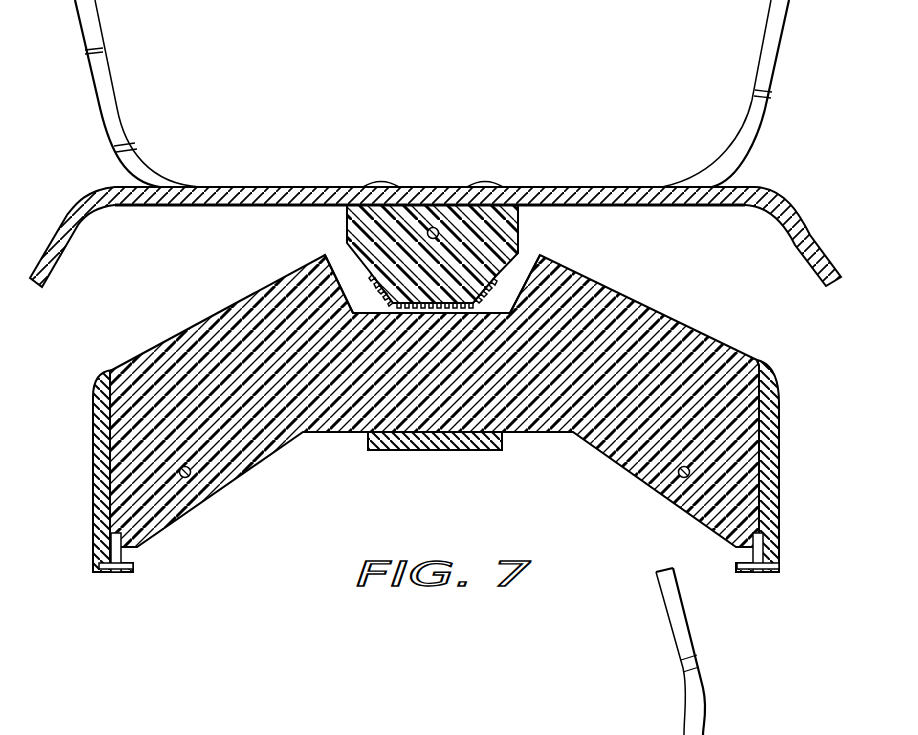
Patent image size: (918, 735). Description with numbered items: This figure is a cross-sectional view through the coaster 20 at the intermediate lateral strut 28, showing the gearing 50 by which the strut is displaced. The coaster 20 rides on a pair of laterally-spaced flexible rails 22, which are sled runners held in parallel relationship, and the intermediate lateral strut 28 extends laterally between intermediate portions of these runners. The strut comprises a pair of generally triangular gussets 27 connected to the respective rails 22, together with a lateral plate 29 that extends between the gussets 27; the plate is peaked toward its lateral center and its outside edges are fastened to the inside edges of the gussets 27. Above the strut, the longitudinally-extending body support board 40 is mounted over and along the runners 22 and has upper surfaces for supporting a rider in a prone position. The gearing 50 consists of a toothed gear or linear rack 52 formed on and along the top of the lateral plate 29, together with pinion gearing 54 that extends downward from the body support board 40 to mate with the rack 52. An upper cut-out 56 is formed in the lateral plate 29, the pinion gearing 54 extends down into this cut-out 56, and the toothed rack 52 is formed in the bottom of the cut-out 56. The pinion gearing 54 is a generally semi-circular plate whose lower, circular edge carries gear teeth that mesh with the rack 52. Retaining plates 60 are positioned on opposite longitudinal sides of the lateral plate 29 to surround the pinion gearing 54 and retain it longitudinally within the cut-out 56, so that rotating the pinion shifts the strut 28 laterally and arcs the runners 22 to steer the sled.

The coaster 20 is at (505, 56).
The flexible rails 22 is at (113, 573).
The gussets 27 is at (103, 481).
The intermediate lateral strut 28 is at (436, 460).
The lateral plate 29 is at (188, 367).
The body support board 40 is at (280, 184).
The gearing 50 is at (535, 223).
The toothed rack 52 is at (380, 304).
The pinion gearing 54 is at (351, 261).
The upper cut-out 56 is at (509, 274).
The retaining plates 60 is at (505, 296).